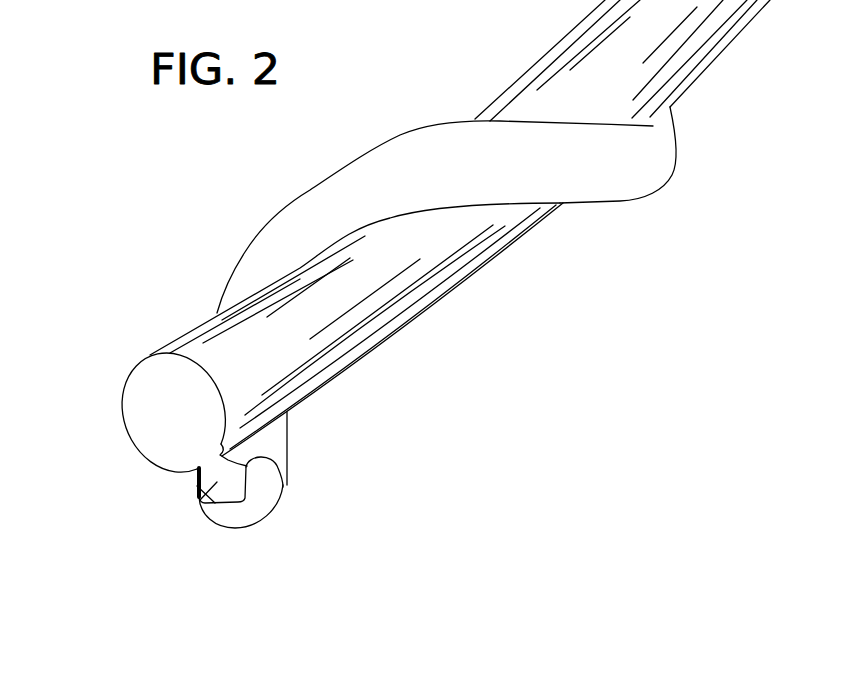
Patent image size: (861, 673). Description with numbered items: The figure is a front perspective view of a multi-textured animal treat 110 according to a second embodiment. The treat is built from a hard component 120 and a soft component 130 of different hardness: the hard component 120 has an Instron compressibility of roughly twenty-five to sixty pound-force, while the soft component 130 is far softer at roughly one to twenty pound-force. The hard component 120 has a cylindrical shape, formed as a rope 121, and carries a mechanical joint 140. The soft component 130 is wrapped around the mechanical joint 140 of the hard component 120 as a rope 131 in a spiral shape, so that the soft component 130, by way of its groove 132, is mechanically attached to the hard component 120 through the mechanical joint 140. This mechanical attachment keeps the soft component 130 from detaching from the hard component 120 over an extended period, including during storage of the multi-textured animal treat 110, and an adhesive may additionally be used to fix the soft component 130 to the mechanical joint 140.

The multi-textured animal treat 110 is at (565, 317).
The hard component 120 is at (556, 47).
The rope 121 is at (139, 408).
The soft component 130 is at (303, 198).
The rope 131 is at (222, 523).
The groove 132 is at (264, 494).
The mechanical joint 140 is at (203, 500).